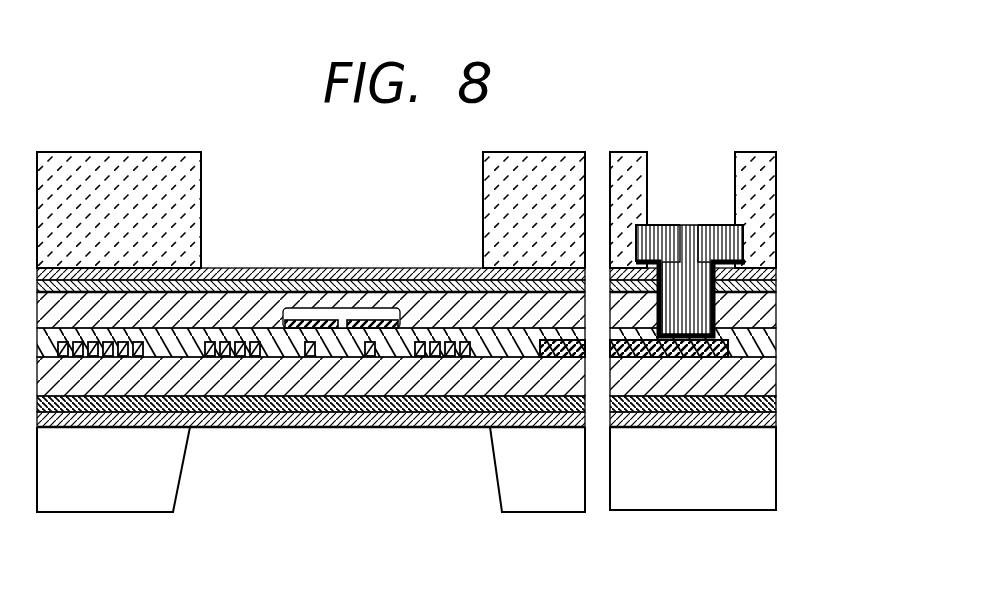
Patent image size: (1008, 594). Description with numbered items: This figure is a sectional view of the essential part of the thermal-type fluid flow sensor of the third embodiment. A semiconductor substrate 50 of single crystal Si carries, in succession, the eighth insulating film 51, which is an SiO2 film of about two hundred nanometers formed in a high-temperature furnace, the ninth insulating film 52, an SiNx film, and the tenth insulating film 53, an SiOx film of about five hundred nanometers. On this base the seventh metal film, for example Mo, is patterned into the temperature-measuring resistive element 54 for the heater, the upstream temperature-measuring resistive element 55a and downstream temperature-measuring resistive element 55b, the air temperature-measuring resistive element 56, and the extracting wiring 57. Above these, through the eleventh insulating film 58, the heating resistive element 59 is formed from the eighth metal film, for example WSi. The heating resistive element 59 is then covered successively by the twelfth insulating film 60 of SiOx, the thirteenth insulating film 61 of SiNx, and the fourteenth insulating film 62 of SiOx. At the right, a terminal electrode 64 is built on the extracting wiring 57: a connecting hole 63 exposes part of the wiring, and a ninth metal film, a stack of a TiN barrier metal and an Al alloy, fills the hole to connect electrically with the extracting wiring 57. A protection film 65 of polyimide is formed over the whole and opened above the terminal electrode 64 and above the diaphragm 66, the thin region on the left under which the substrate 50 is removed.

The semiconductor substrate 50 is at (687, 498).
The eighth insulating film 51 is at (650, 420).
The ninth insulating film 52 is at (772, 402).
The tenth insulating film 53 is at (772, 386).
The temperature-measuring resistive element for the heating resistive element 54 is at (337, 362).
The upstream temperature-measuring resistive element 55a is at (205, 362).
The downstream temperature-measuring resistive element 55b is at (443, 362).
The air temperature-measuring resistive element 56 is at (103, 358).
The extracting wiring 57 is at (700, 360).
The eleventh insulating film 58 is at (770, 343).
The heating resistive element 59 is at (345, 310).
The twelfth insulating film 60 is at (763, 310).
The thirteenth insulating film 61 is at (397, 284).
The fourteenth insulating film 62 is at (445, 272).
The connecting hole 63 is at (700, 287).
The terminal electrode 64 is at (728, 247).
The protection film 65 is at (768, 173).
The diaphragm 66 is at (547, 500).